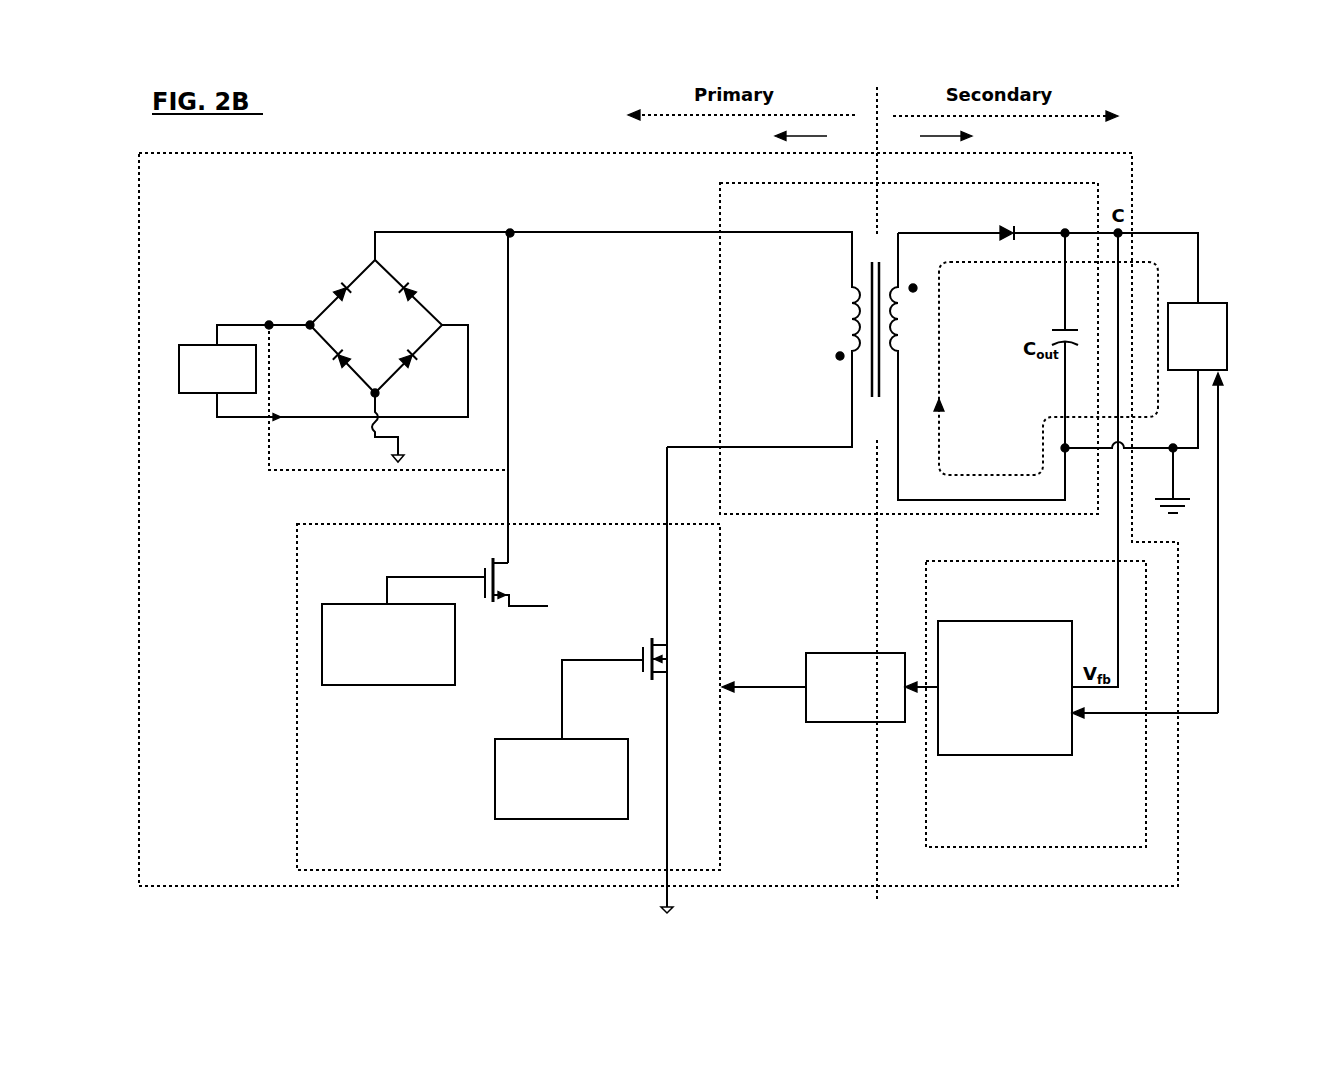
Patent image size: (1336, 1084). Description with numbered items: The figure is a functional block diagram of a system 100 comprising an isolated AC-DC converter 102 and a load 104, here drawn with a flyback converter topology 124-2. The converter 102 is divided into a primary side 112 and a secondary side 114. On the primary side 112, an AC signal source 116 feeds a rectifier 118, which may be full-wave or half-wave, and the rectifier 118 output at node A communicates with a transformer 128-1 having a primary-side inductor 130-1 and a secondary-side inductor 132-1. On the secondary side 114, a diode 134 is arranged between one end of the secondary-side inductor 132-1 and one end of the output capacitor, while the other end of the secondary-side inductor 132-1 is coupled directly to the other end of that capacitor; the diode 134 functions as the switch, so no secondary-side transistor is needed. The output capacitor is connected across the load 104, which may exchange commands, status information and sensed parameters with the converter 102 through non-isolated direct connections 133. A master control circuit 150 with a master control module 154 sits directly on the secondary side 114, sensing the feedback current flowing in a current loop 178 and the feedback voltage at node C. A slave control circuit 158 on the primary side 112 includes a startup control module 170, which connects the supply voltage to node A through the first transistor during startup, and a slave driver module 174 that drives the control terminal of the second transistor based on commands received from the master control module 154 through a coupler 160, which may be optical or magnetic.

The system 100 is at (658, 486).
The isolated AC-DC converter 102 is at (407, 153).
The load 104 is at (1213, 303).
The primary side 112 is at (819, 136).
The secondary side 114 is at (929, 136).
The AC signal source 116 is at (200, 345).
The rectifier 118 is at (403, 333).
The flyback converter topology 124-2 is at (720, 217).
The transformer 128-1 is at (685, 339).
The primary-side inductor 130-1 is at (788, 378).
The secondary-side inductor 132-1 is at (977, 366).
The direct connections 133 is at (1218, 543).
The diode D5 134 is at (1045, 253).
The master control circuit 150 is at (1023, 848).
The master control module 154 is at (983, 621).
The slave control circuit 158 is at (600, 526).
The coupler 160 is at (843, 653).
The startup control module 170 is at (372, 604).
The slave driver module 174 is at (494, 766).
The current loop 178 is at (943, 397).